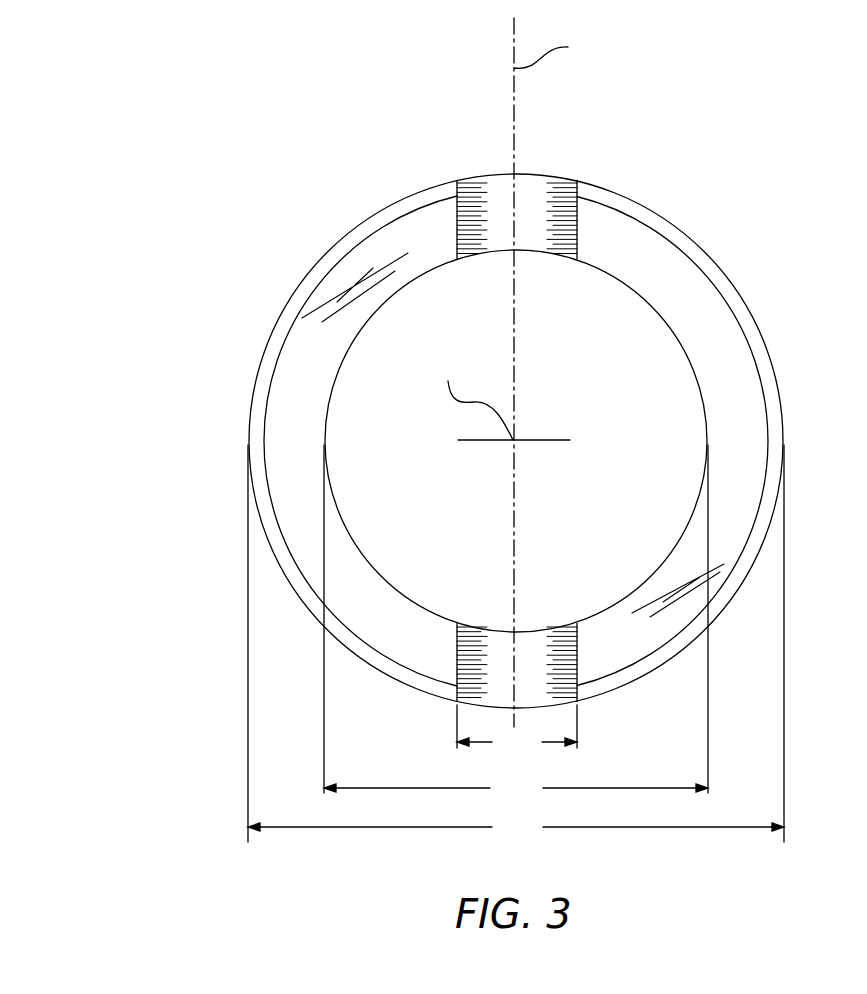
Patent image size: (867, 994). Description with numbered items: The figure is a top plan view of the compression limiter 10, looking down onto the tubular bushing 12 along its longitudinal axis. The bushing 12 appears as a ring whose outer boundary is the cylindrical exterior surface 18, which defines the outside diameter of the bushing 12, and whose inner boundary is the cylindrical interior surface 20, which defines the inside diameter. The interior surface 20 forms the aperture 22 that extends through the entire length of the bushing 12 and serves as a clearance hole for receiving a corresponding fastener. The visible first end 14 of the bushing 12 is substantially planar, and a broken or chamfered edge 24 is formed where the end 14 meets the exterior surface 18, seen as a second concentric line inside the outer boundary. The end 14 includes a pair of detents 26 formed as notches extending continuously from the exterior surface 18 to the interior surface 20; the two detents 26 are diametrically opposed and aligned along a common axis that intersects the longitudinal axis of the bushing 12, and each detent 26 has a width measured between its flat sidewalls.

The compression limiter 10 is at (243, 126).
The tubular bushing 12 is at (273, 308).
The first end 14 is at (653, 258).
The exterior surface 18 is at (742, 300).
The interior surface 20 is at (690, 360).
The aperture 22 is at (400, 475).
The chamfered edge 24 is at (370, 238).
The detent 26 is at (498, 202).